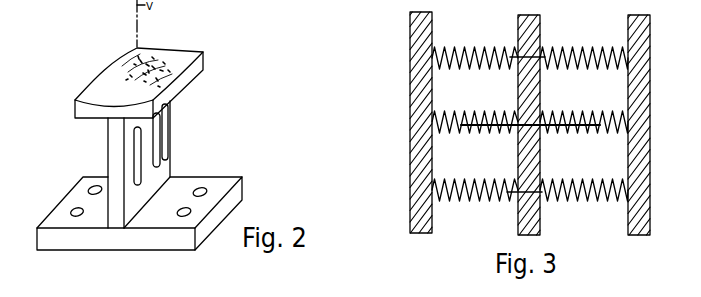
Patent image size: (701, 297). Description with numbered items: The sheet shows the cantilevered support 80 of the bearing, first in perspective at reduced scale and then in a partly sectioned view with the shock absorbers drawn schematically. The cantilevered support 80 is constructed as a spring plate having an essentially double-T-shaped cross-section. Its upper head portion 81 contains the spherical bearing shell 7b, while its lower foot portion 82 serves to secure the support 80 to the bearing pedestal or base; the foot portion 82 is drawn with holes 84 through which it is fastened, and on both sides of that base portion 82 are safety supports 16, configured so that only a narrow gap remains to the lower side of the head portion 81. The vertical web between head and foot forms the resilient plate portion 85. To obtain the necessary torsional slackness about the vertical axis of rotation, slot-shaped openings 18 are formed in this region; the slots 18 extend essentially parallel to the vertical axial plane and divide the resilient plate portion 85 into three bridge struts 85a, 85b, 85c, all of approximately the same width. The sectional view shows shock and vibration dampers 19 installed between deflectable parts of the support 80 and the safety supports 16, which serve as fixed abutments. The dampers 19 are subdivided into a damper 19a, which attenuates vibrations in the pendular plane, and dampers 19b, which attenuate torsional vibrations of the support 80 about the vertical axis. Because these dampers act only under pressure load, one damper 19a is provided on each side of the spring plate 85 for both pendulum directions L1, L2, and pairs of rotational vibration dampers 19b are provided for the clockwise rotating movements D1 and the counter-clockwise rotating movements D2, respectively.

In FIG. 2, the spherical shell 7b is at (157, 68).
In FIG. 2, the upper head portion 81 is at (203, 67).
In FIG. 2, the lower foot portion 82 is at (230, 190).
In FIG. 2, the mounting holes 84 is at (73, 207).
In FIG. 2, the resilient plate portion 85 is at (153, 185).
In FIG. 2, the bridge strut 85a is at (137, 150).
In FIG. 2, the bridge strut 85b is at (163, 152).
In FIG. 2, the bridge strut 85c is at (168, 157).
In FIG. 2, the slot-shaped openings 18 is at (150, 147).
In FIG. 3, the safety supports 16 is at (420, 28).
In FIG. 3, the cantilevered support 80 is at (530, 222).
In FIG. 3, the shock and vibration dampers 19 is at (572, 26).
In FIG. 3, the damper 19a is at (452, 127).
In FIG. 3, the rotational vibration damper 19b is at (448, 50).
In FIG. 3, the rotating movement in clockwise direction D1 is at (590, 68).
In FIG. 3, the rotating movement in counter-clockwise direction D2 is at (470, 68).
In FIG. 3, the pendulum direction L1 is at (477, 130).
In FIG. 3, the pendulum direction L2 is at (586, 130).